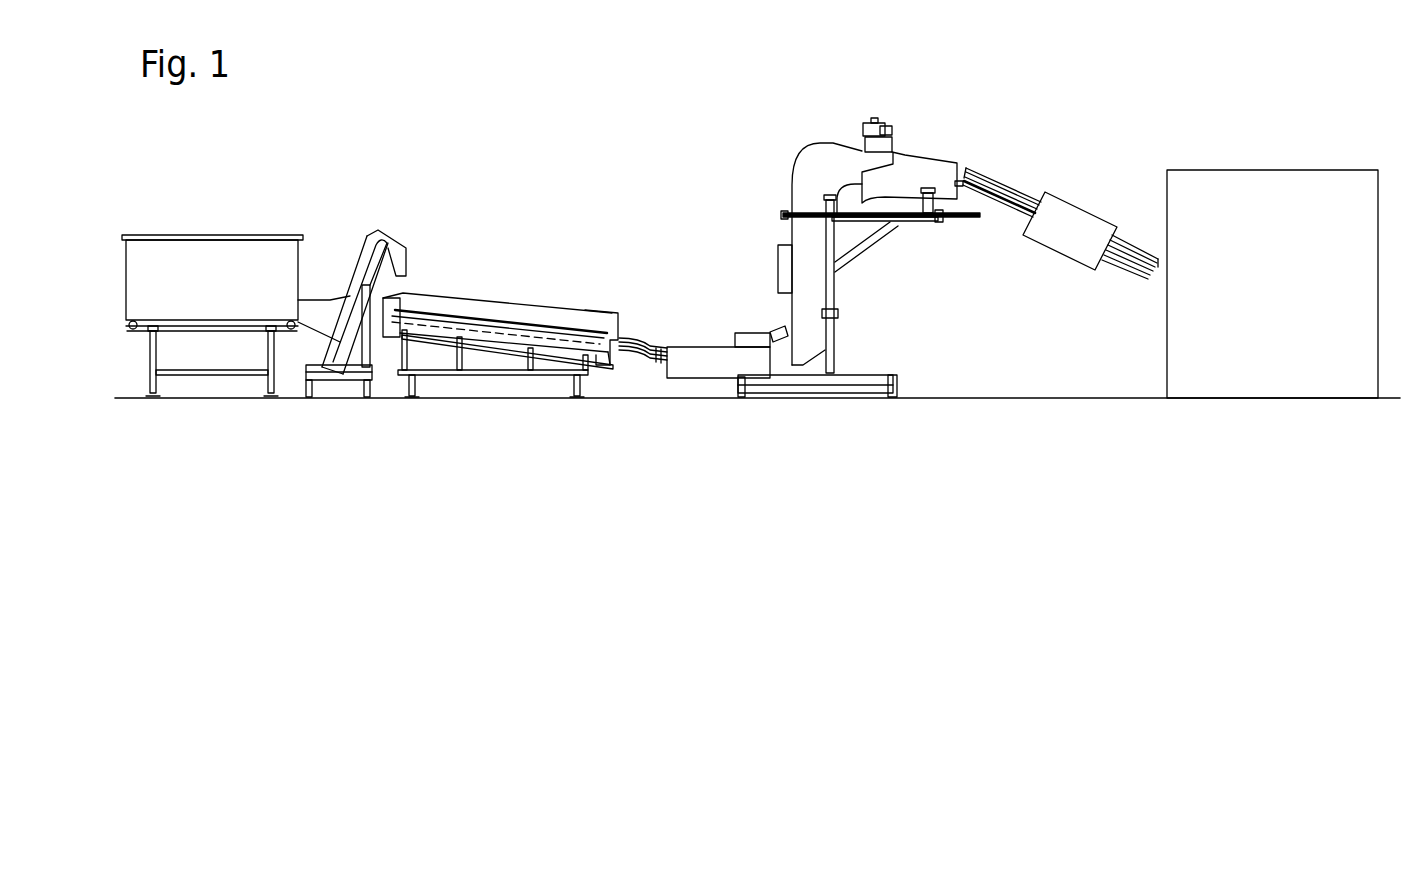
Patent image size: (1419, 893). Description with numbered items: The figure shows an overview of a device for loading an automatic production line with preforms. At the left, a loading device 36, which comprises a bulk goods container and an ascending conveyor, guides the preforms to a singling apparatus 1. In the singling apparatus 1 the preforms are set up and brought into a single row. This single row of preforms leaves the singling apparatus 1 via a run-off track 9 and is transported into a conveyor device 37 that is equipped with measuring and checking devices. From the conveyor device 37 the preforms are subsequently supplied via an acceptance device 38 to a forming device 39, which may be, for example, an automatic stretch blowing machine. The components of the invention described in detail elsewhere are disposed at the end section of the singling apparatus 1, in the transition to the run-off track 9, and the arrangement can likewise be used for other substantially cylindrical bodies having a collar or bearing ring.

The loading device 36 is at (288, 292).
The singling apparatus 1 is at (512, 352).
The run-off track 9 is at (652, 360).
The conveyor device 37 is at (785, 360).
The acceptance device 38 is at (1052, 238).
The forming device 39 is at (1263, 332).